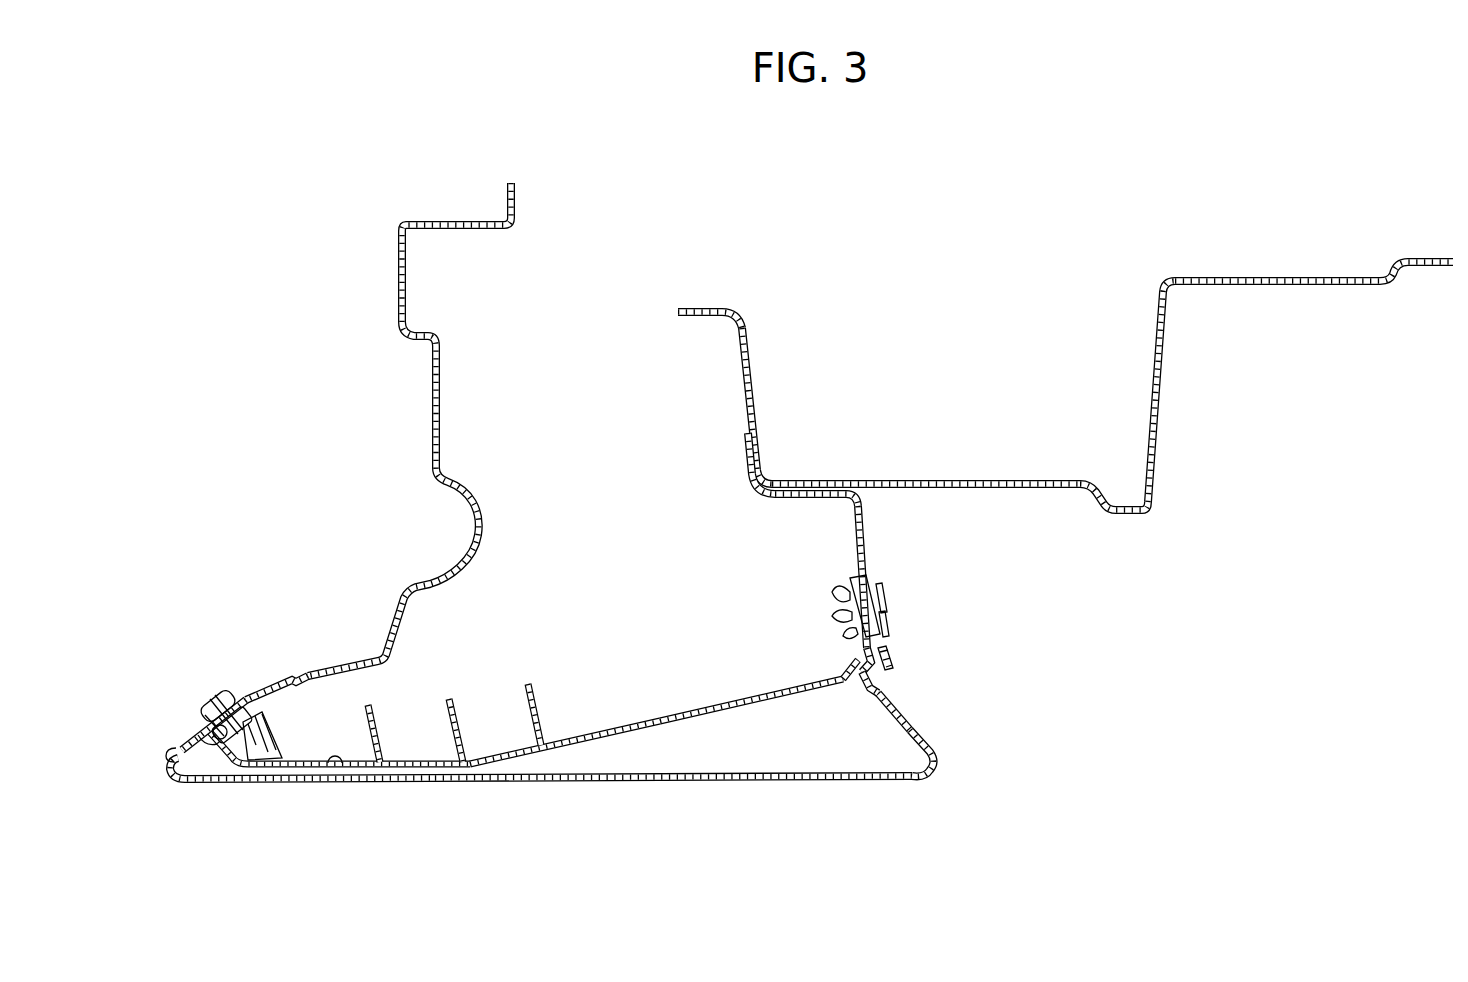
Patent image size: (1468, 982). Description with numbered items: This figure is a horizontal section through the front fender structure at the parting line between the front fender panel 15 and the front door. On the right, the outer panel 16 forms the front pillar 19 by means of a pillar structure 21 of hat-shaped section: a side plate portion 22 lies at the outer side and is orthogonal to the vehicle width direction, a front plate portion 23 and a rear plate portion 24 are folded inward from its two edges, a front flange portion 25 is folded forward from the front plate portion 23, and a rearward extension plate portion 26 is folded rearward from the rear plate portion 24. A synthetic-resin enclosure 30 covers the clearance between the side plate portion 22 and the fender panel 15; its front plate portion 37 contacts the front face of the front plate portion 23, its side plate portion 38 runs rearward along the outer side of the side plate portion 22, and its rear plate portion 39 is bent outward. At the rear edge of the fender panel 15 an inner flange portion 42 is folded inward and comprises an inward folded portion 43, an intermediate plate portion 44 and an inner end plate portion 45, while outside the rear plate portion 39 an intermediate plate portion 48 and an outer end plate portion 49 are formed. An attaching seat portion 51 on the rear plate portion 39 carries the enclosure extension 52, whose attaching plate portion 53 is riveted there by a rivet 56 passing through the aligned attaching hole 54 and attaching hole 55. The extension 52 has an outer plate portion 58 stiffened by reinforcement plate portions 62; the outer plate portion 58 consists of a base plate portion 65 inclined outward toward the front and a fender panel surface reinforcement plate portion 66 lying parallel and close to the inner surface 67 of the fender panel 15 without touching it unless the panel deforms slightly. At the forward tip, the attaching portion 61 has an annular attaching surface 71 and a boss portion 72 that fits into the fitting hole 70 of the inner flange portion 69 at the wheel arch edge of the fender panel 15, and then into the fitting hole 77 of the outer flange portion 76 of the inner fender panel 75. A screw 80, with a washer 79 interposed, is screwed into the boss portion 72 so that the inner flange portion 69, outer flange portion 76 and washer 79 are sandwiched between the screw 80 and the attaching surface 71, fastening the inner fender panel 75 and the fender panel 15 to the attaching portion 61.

The front fender panel 15 is at (600, 785).
The outer panel 16 is at (1061, 493).
The front pillar 19 is at (1105, 512).
The pillar structure 21 is at (1150, 516).
The side plate portion 22 is at (1005, 492).
The front plate portion 23 is at (748, 372).
The rear plate portion 24 is at (1160, 395).
The front flange portion 25 is at (690, 310).
The rearward extension plate portion 26 is at (1296, 279).
The enclosure 30 is at (862, 518).
The front plate portion 37 is at (748, 462).
The side plate portion 38 is at (785, 500).
The rear plate portion 39 is at (858, 540).
The inner flange portion 42 is at (930, 745).
The inward folded portion 43 is at (905, 720).
The intermediate plate portion 44 is at (888, 670).
The inner end plate portion 45 is at (890, 652).
The intermediate plate portion 48 is at (850, 670).
The outer end plate portion 49 is at (862, 693).
The attaching seat portion 51 is at (870, 575).
The enclosure extension 52 is at (712, 715).
The attaching plate portion 53 is at (847, 592).
The attaching hole 54 is at (845, 612).
The attaching hole 55 is at (878, 600).
The rivet 56 is at (880, 615).
The outer plate portion 58 is at (505, 770).
The attaching portion 61 is at (262, 720).
The reinforcement plate portions 62 is at (370, 702).
The base plate portion 65 is at (662, 725).
The fender panel surface reinforcement plate portion 66 is at (398, 783).
The inner surface 67 is at (335, 762).
The inner flange portion 69 is at (180, 748).
The fitting hole 70 is at (215, 735).
The attaching surface 71 is at (244, 700).
The boss portion 72 is at (225, 718).
The inner fender panel 75 is at (400, 226).
The outer flange portion 76 is at (270, 690).
The fitting hole 77 is at (238, 700).
The washer 79 is at (205, 740).
The screw 80 is at (212, 722).